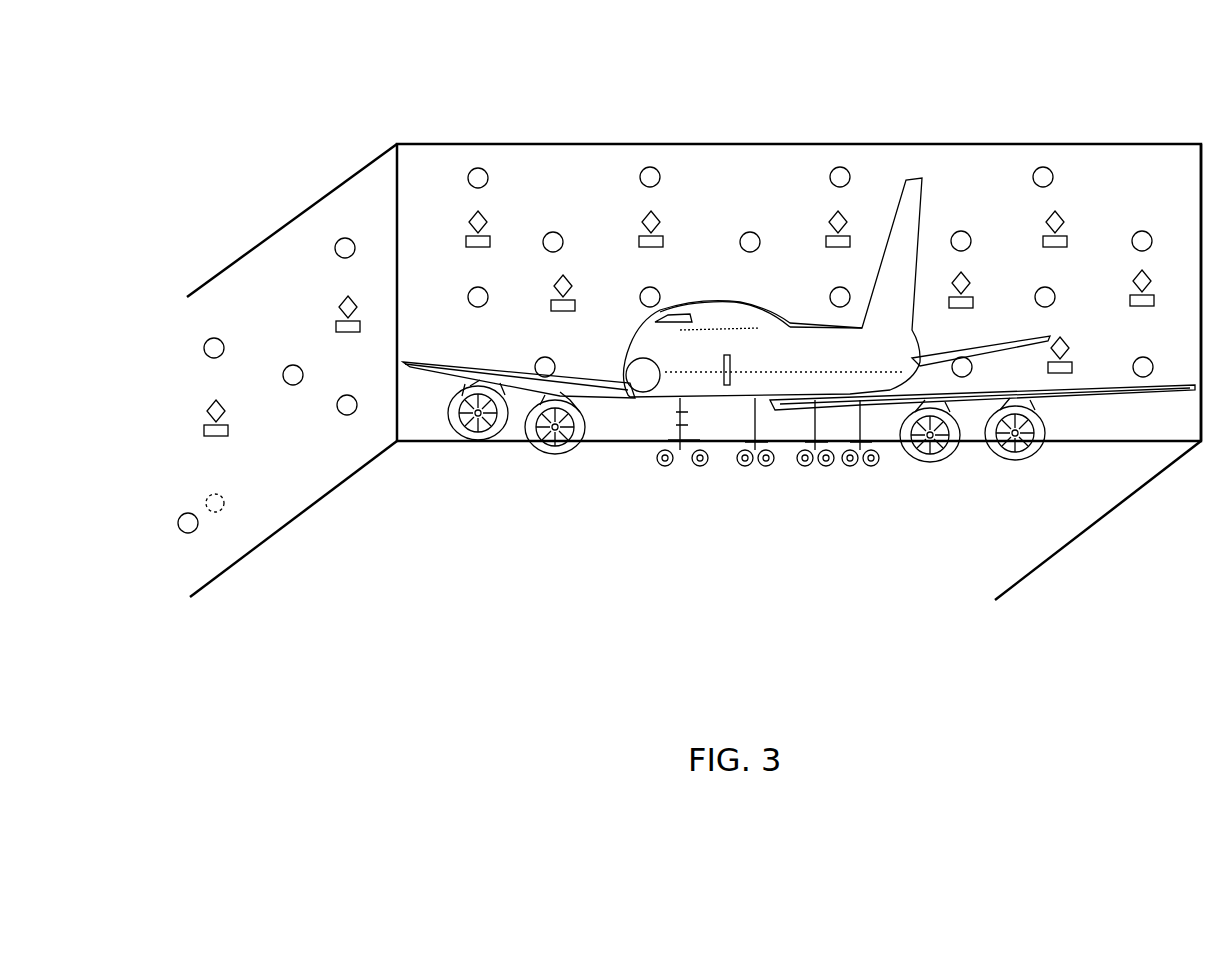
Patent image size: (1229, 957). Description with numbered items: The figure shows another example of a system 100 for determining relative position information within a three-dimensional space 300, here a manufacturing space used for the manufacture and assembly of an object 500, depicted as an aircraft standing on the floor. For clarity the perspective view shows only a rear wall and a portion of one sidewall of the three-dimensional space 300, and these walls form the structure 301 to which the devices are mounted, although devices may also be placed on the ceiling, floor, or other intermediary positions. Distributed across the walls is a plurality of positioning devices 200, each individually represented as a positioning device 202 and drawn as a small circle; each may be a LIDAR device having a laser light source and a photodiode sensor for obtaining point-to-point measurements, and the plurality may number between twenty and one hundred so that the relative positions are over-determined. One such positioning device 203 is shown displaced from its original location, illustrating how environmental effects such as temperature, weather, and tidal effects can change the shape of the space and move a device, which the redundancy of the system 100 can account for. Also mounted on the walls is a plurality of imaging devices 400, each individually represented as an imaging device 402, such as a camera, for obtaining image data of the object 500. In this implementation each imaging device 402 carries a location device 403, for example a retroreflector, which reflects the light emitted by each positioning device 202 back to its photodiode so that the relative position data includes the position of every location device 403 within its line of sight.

The system 100 is at (1066, 108).
The plurality of positioning devices 200 is at (1032, 172).
The positioning device 202 is at (489, 172).
The positioning device 203 is at (212, 494).
The three-dimensional space 300 is at (712, 570).
The structure 301 is at (425, 163).
The plurality of imaging devices 400 is at (466, 241).
The imaging device 402 is at (486, 248).
The location device 403 is at (488, 213).
The object 500 is at (757, 485).